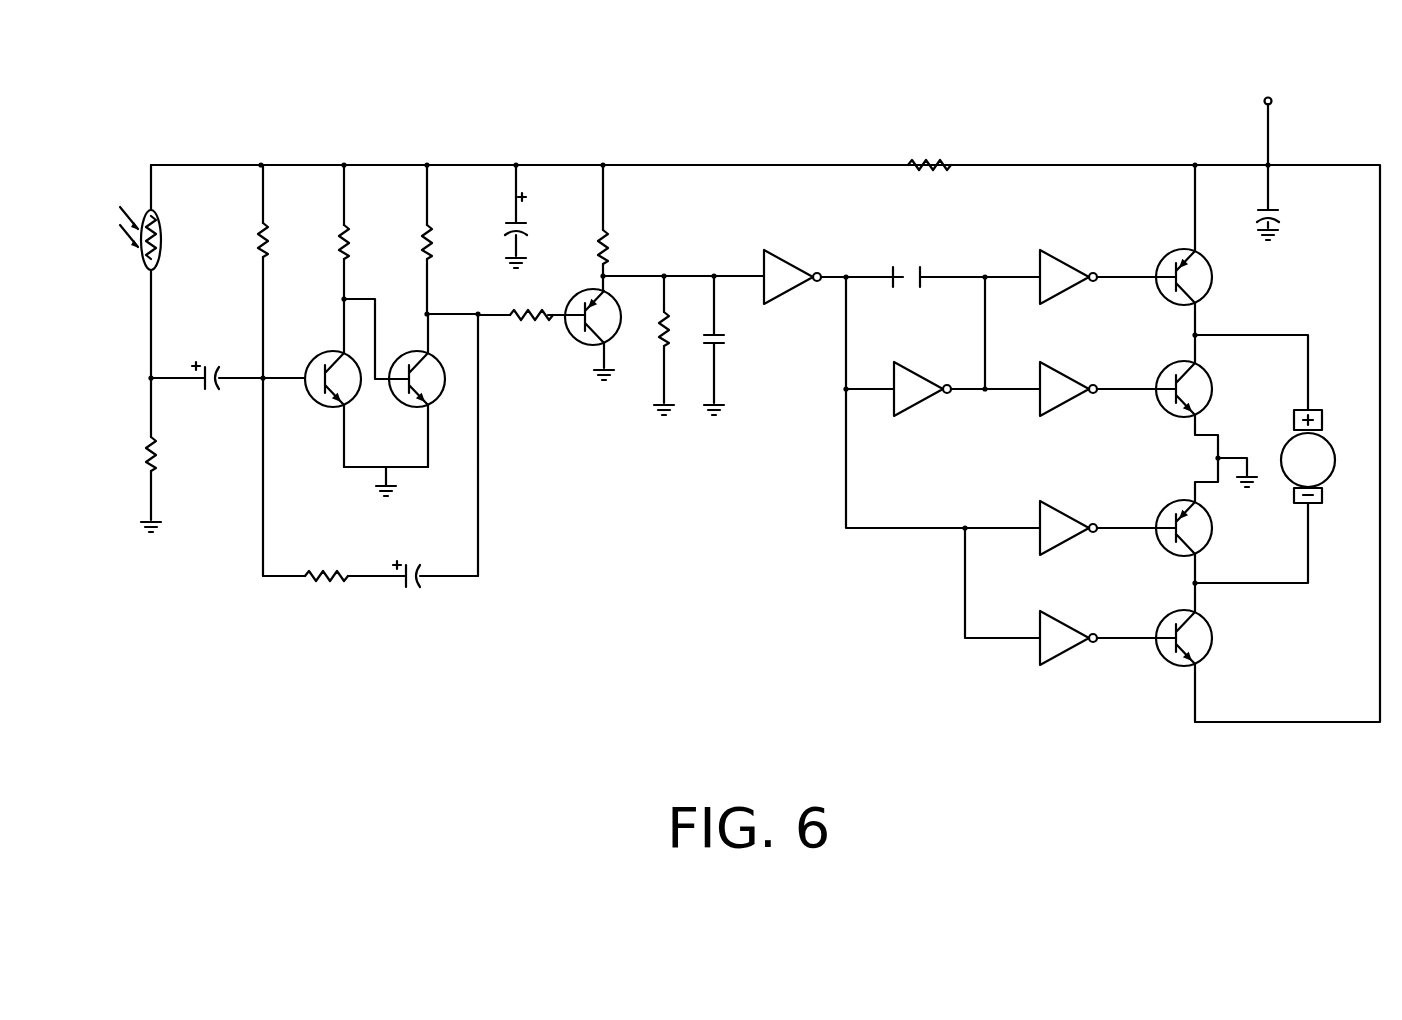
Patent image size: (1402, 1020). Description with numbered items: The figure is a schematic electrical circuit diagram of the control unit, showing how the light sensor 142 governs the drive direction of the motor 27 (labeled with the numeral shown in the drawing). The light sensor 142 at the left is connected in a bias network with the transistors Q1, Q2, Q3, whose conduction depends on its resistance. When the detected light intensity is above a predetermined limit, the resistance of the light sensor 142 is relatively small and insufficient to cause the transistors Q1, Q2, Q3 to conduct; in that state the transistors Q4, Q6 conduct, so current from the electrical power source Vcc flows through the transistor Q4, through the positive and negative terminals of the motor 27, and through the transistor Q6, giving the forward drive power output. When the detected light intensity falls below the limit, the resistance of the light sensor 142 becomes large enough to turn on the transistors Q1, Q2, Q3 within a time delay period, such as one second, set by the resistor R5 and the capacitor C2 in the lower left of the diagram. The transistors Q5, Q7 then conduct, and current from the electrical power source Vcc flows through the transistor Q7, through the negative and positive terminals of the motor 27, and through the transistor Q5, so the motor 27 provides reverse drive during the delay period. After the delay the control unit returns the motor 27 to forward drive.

The light sensor 142 is at (143, 263).
The motor 27 is at (1333, 447).
The transistor Q1 is at (327, 383).
The transistor Q2 is at (427, 390).
The transistor Q3 is at (565, 333).
The transistor Q4 is at (1194, 250).
The transistor Q5 is at (1194, 418).
The transistor Q6 is at (1195, 541).
The transistor Q7 is at (1195, 652).
The resistor R5 is at (334, 560).
The capacitor C2 is at (435, 559).
The electrical power source Vcc is at (1270, 155).